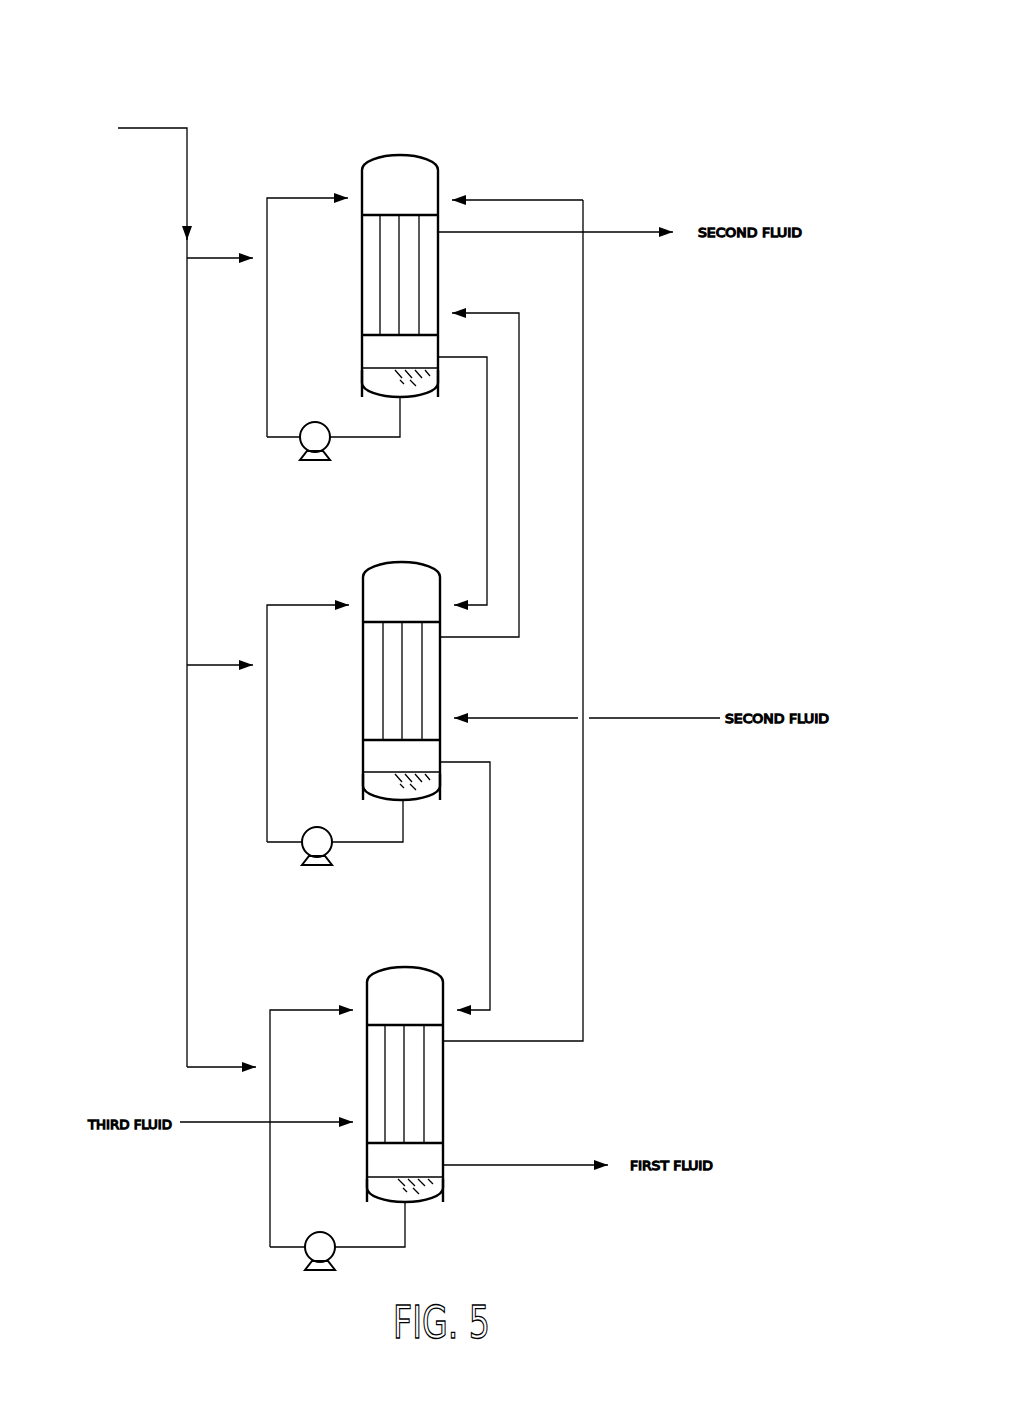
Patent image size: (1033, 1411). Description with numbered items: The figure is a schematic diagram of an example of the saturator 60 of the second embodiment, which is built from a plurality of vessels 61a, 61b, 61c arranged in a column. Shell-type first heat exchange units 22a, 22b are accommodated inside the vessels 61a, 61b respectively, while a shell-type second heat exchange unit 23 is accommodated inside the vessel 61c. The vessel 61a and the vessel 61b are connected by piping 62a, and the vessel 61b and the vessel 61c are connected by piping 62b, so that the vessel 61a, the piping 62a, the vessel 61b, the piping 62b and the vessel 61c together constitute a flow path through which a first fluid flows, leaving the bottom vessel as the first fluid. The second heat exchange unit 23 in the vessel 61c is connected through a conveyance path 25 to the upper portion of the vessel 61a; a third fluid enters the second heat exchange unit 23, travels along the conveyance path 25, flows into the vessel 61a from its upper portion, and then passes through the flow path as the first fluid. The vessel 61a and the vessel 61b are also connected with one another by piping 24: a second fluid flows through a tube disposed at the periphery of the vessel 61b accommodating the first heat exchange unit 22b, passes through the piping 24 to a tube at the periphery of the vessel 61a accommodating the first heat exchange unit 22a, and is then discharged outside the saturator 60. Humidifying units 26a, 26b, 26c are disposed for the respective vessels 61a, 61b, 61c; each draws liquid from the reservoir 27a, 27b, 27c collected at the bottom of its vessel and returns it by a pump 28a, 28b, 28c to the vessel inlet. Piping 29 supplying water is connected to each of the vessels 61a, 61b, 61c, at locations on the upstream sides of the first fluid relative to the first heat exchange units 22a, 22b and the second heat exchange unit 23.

The saturator 60 is at (507, 92).
The piping 29 is at (130, 125).
The humidifying unit 26a is at (284, 176).
The humidifying unit 26b is at (270, 582).
The humidifying unit 26c is at (287, 985).
The pump 28a is at (300, 454).
The pump 28b is at (302, 860).
The pump 28c is at (305, 1264).
The first heat exchange unit 22a is at (440, 272).
The first heat exchange unit 22b is at (442, 678).
The second heat exchange unit 23 is at (445, 1095).
The vessel 61a is at (378, 143).
The vessel 61b is at (378, 547).
The vessel 61c is at (395, 951).
The liquid reservoir 27a is at (419, 388).
The liquid reservoir 27b is at (428, 800).
The liquid reservoir 27c is at (437, 1197).
The piping 24 is at (521, 438).
The conveyance path 25 is at (585, 508).
The piping 62a is at (486, 504).
The piping 62b is at (492, 863).